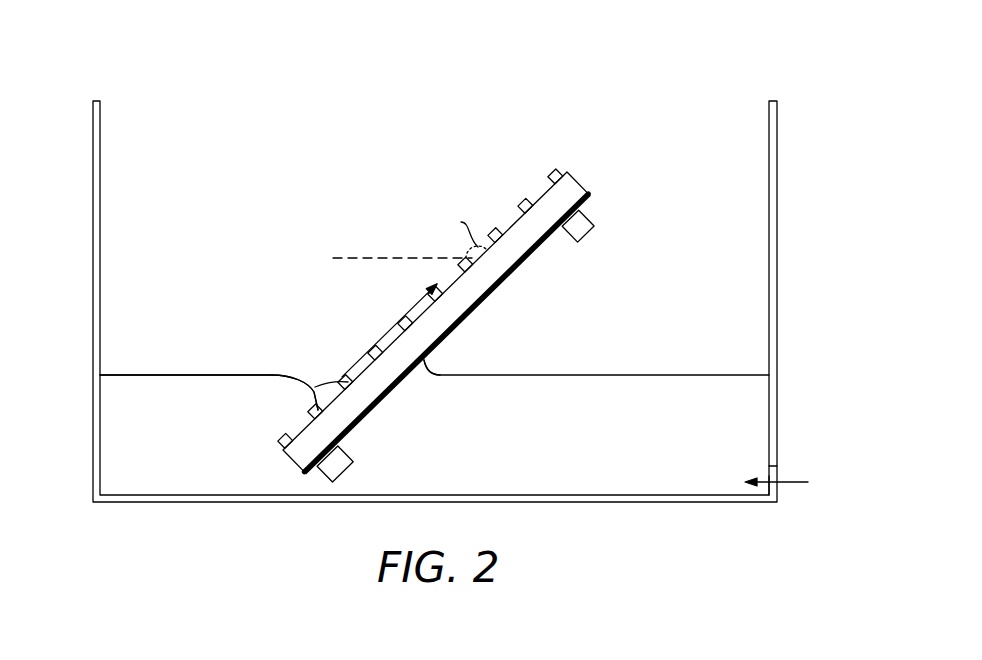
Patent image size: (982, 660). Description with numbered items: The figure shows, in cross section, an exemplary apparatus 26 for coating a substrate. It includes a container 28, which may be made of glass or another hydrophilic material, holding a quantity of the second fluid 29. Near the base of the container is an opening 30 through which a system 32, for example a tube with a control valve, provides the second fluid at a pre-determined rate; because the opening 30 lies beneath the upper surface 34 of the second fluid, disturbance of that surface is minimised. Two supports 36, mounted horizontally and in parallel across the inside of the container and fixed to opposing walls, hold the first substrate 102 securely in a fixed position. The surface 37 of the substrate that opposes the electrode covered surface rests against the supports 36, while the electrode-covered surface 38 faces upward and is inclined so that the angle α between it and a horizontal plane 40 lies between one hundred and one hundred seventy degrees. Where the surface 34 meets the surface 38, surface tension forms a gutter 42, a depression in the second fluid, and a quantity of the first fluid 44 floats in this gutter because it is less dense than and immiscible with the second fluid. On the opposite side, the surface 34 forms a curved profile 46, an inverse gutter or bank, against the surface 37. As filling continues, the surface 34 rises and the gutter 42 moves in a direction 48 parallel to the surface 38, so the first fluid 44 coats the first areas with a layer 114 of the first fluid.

The apparatus 26 is at (466, 284).
The container 28 is at (777, 200).
The second fluid 29 is at (750, 412).
The opening 30 is at (773, 472).
The system for providing the second fluid 32 is at (790, 482).
The upper surface of the second fluid 34 is at (182, 375).
The supports 36 is at (592, 230).
The surface opposing the electrode covered surface 37 is at (508, 278).
The surface of the first substrate covered with the electrodes 38 is at (514, 224).
The horizontal plane 40 is at (350, 258).
The gutter 42 is at (313, 390).
The first fluid 44 is at (316, 386).
The curved profile 46 is at (427, 357).
The direction 48 is at (387, 330).
The first substrate 102 is at (584, 181).
The layer of the first fluid 114 is at (283, 440).